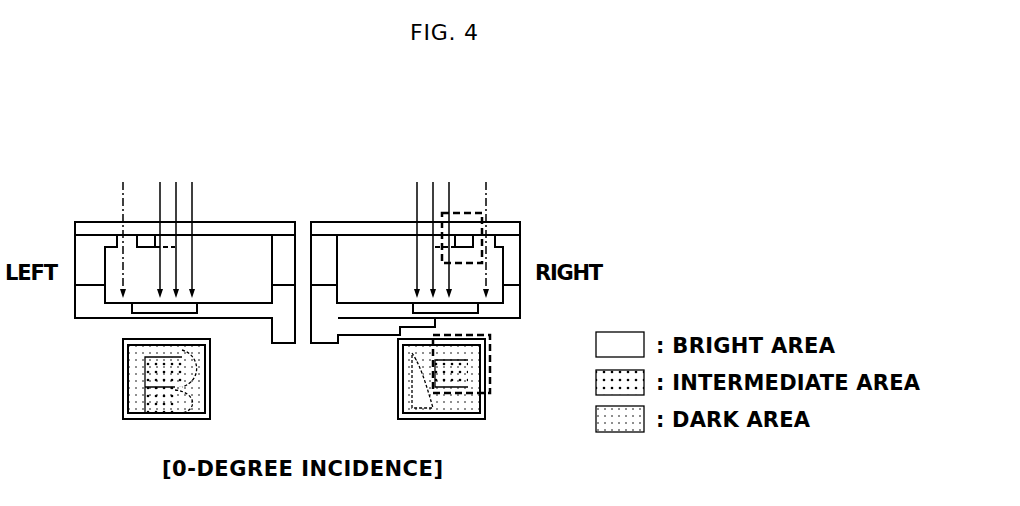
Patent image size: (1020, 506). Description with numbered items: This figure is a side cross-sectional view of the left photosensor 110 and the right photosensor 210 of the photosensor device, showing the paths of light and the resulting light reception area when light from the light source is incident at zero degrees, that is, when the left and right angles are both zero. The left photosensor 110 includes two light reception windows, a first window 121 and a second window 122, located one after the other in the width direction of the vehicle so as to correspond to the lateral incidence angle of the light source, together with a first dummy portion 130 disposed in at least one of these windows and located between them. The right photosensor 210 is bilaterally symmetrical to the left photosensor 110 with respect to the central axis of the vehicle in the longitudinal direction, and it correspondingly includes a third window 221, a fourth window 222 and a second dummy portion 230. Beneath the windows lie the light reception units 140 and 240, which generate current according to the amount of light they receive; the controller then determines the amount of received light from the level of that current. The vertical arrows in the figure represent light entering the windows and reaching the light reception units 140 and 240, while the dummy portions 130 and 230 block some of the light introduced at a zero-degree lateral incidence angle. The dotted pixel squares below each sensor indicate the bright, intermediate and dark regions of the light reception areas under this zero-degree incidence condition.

The left photosensor 110 is at (444, 391).
The first window 121 is at (492, 232).
The second window 122 is at (395, 233).
The first dummy portion 130 is at (473, 216).
The light reception unit 140 is at (494, 303).
The right photosensor 210 is at (166, 393).
The third window 221 is at (119, 233).
The fourth window 222 is at (183, 233).
The second dummy portion 230 is at (153, 212).
The light reception unit 240 is at (107, 302).